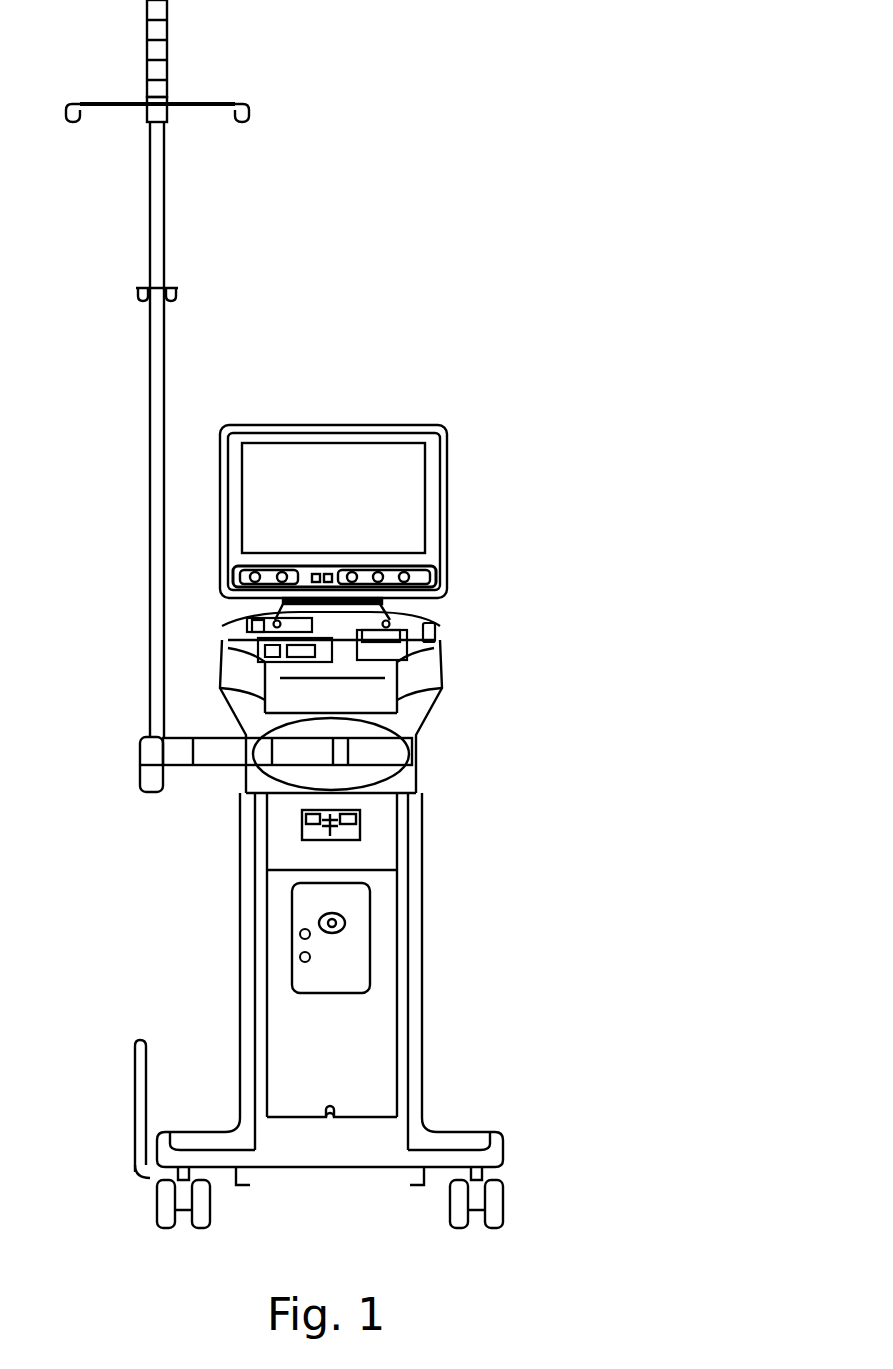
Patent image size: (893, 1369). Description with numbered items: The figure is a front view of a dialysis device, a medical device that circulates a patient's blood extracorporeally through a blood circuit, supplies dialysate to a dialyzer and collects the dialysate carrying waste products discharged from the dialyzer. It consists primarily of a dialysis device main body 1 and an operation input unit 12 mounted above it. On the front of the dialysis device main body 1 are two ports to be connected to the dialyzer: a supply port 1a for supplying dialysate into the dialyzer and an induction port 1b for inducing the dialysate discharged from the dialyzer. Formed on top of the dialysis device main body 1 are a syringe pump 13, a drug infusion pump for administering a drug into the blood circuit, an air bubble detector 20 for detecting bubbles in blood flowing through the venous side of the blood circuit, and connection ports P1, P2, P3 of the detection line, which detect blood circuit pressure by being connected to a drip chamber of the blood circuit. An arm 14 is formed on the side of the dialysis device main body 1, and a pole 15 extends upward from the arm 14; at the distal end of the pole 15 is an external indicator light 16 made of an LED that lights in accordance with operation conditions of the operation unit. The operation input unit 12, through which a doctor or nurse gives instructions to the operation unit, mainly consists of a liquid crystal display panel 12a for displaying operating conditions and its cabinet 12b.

The dialysis device main body 1 is at (422, 909).
The supply port 1a is at (297, 934).
The induction port 1b is at (297, 958).
The operation input unit 12 is at (449, 476).
The liquid crystal display panel 12a is at (378, 457).
The cabinet 12b is at (249, 437).
The syringe pump 13 is at (440, 634).
The arm 14 is at (213, 757).
The pole 15 is at (148, 333).
The external indicator light 16 is at (147, 32).
The air bubble detector 20 is at (392, 658).
The connection port P1 is at (437, 630).
The connection port P2 is at (248, 624).
The connection port P3 is at (275, 620).